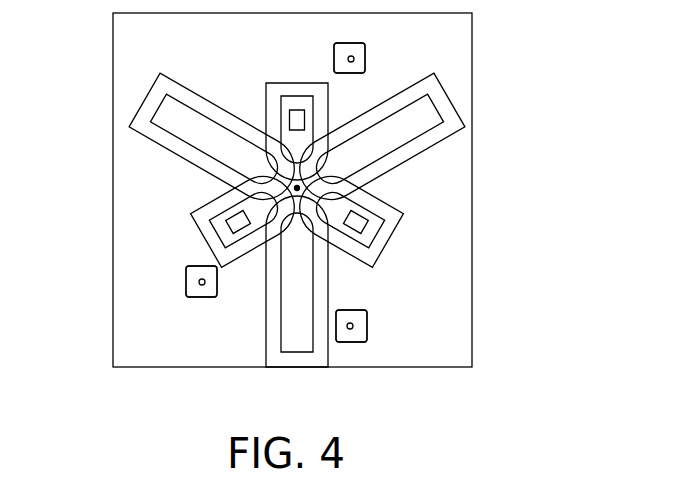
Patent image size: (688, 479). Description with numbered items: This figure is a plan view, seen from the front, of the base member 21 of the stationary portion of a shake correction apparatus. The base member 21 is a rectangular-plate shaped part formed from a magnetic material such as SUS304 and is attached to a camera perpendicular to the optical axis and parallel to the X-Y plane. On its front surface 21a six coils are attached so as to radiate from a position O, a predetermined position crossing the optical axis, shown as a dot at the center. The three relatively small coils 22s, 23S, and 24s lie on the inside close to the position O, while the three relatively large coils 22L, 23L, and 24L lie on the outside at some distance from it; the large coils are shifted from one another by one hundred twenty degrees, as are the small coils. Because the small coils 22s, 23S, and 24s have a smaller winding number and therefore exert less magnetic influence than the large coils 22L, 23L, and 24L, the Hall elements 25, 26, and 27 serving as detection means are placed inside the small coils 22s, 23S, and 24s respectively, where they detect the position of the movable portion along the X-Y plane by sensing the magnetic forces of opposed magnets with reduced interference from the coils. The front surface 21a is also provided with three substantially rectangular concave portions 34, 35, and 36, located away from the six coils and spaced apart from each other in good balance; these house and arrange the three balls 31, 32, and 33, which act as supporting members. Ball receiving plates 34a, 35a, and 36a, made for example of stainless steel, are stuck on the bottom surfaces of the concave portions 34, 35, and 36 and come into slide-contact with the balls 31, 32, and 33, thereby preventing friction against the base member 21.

The base member 21 is at (472, 312).
The front surface 21a is at (182, 353).
The position O is at (297, 185).
The coil 22s is at (304, 88).
The coil 22L is at (296, 358).
The coil 23L is at (147, 112).
The coil 23S is at (377, 207).
The coil 24L is at (453, 105).
The coil 24s is at (207, 232).
The Hall element 25 is at (293, 115).
The Hall element 26 is at (358, 227).
The Hall element 27 is at (243, 228).
The ball 31 is at (351, 62).
The ball 32 is at (350, 322).
The ball 33 is at (204, 285).
The concave portion 34 is at (360, 50).
The ball receiving plate 34a is at (358, 62).
The concave portion 35 is at (357, 342).
The ball receiving plate 35a is at (367, 333).
The concave portion 36 is at (198, 268).
The ball receiving plate 36a is at (189, 287).